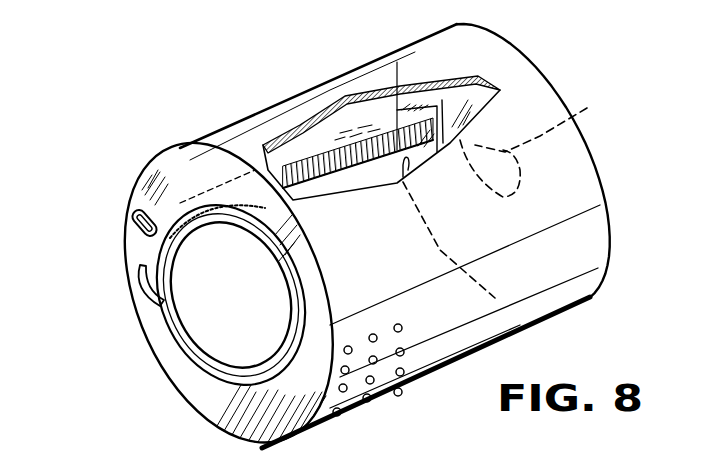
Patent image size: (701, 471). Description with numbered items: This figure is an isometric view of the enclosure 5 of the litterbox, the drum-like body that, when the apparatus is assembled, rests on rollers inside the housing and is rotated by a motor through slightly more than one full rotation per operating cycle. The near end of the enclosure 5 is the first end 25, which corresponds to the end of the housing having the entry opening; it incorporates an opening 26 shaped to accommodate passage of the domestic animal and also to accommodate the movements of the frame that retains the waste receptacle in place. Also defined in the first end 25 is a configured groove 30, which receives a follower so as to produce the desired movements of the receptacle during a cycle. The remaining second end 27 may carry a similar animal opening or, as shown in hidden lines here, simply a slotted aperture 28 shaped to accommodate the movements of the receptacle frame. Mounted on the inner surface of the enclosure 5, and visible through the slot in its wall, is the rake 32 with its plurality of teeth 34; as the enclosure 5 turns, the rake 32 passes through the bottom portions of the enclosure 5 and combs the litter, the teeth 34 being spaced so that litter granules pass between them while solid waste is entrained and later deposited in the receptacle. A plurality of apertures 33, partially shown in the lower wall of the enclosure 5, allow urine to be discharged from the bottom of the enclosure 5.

The enclosure 5 is at (360, 247).
The first end 25 is at (212, 397).
The opening 26 is at (208, 320).
The second end 27 is at (588, 183).
The slotted aperture 28 is at (510, 186).
The configured groove 30 is at (156, 306).
The rake 32 is at (305, 160).
The apertures 33 is at (380, 320).
The teeth 34 is at (350, 188).